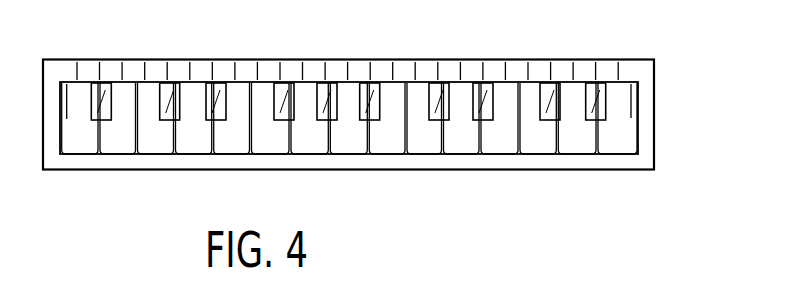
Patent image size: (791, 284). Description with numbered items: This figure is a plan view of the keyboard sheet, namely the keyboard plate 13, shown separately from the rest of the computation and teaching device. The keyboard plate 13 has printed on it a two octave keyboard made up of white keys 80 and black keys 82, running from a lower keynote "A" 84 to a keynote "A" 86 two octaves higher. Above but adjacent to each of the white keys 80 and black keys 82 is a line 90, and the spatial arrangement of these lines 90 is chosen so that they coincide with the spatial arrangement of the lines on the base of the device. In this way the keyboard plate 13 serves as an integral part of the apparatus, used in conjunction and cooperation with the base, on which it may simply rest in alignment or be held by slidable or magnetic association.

The keyboard plate 13 is at (637, 55).
The white keys 80 is at (470, 149).
The black keys 82 is at (97, 84).
The keynote "A" 84 is at (88, 149).
The keynote "A" two octaves higher 86 is at (627, 137).
The line 90 is at (171, 62).